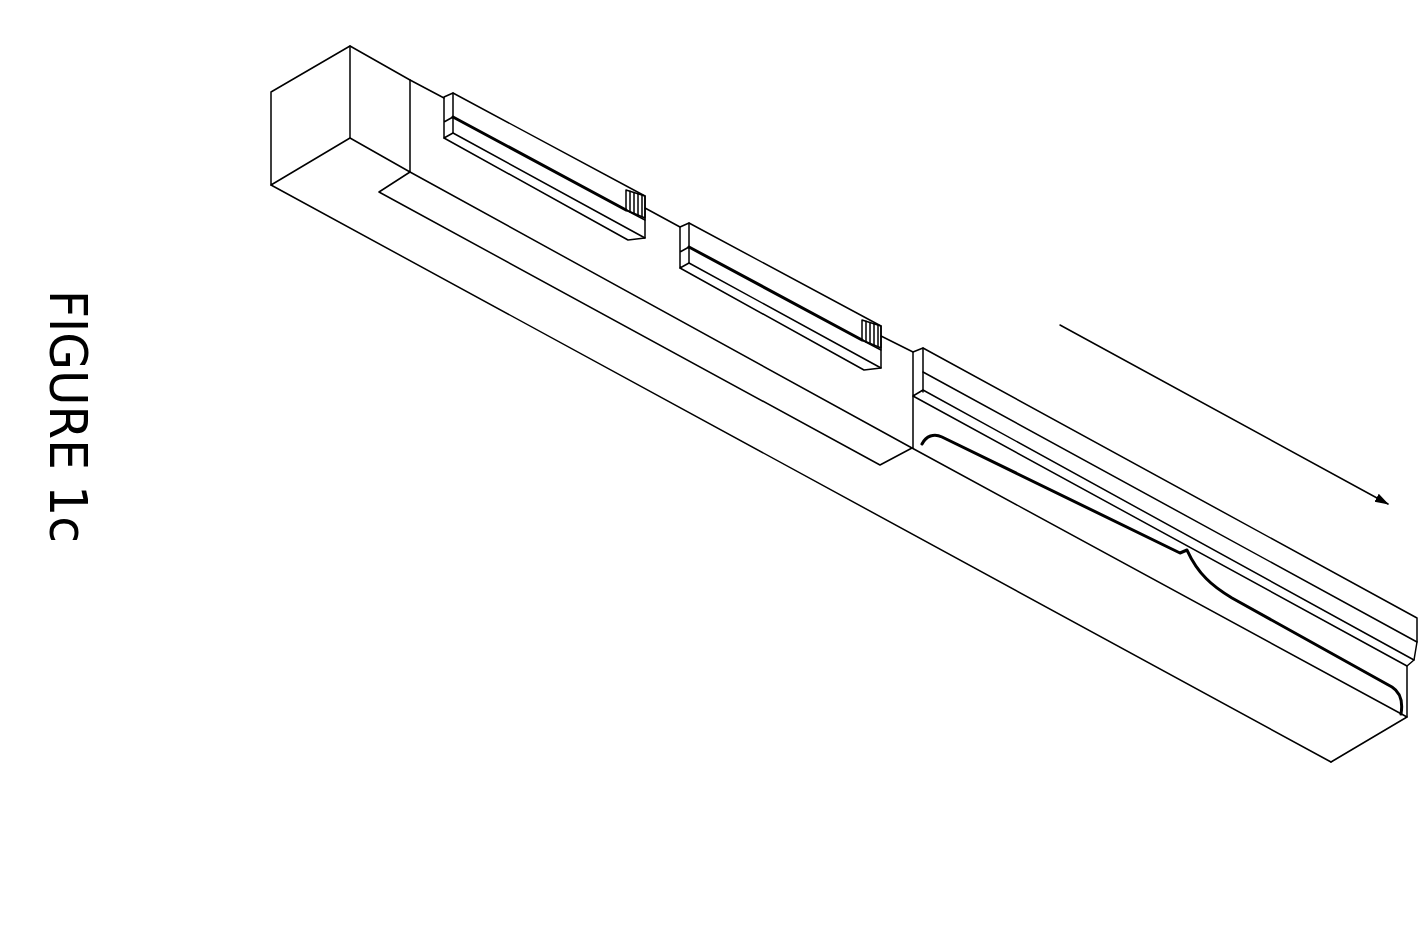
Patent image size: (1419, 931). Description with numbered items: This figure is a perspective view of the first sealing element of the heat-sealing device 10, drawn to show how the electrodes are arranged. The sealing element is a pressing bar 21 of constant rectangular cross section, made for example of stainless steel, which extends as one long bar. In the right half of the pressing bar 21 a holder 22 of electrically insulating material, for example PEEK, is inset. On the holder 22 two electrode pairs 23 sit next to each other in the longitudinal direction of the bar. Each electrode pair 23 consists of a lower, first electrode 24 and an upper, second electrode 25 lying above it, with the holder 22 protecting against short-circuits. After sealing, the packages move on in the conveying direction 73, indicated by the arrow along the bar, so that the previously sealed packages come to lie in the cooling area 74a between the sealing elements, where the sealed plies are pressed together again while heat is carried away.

The device for heat-sealing 10 is at (921, 618).
The pressing bar 21 is at (317, 124).
The holder 22 is at (614, 310).
The electrode pair 23 is at (580, 139).
The first electrode 24 is at (712, 242).
The second electrode 25 is at (817, 328).
The conveying direction 73 is at (1224, 414).
The cooling area 74a is at (1162, 574).